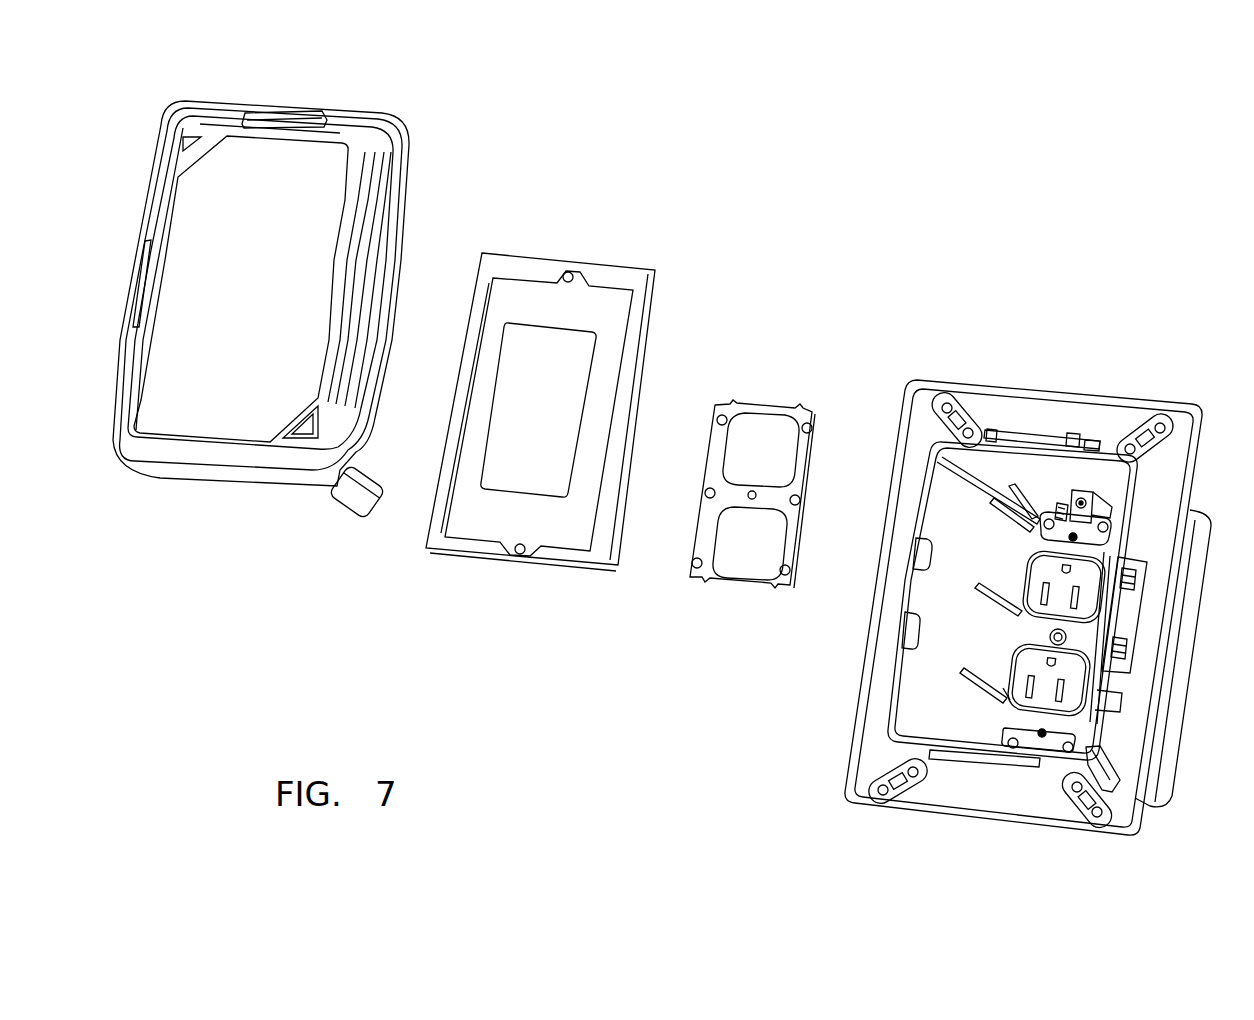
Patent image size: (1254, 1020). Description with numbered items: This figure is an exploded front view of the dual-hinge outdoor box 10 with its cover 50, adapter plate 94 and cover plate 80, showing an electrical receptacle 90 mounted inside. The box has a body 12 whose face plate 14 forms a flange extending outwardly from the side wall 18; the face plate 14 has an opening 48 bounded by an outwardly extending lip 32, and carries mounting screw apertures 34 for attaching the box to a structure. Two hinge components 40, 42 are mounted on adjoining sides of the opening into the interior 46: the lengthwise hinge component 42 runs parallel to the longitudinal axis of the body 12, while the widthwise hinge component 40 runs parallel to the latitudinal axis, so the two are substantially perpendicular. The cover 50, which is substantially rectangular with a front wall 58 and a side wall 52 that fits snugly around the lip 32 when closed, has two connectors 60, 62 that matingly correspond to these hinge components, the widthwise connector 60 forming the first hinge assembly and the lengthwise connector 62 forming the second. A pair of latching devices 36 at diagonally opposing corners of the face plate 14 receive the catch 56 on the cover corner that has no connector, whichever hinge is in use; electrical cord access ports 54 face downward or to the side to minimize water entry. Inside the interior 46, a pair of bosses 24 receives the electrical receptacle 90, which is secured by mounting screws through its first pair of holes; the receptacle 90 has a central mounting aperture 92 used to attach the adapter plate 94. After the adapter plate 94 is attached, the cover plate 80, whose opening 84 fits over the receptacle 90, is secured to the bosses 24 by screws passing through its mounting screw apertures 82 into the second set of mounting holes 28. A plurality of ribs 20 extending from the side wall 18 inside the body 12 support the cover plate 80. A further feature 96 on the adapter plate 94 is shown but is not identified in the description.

The dual-hinge outdoor box 10 is at (700, 652).
The body 12 is at (858, 829).
The face plate 14 is at (953, 793).
The side wall 18 is at (1158, 745).
The ribs 20 is at (990, 502).
The bosses 24 is at (1123, 520).
The second set of mounting holes 28 is at (1083, 498).
The lip 32 is at (1100, 508).
The mounting screw apertures 34 is at (1093, 815).
The latching devices 36 is at (1135, 787).
The hinge component 40 is at (1048, 500).
The hinge component 42 is at (1130, 633).
The interior 46 is at (1048, 496).
The opening 48 is at (905, 703).
The cover 50 is at (176, 90).
The side wall 52 is at (387, 215).
The electrical cord access ports 54 is at (1022, 765).
The catch 56 is at (352, 517).
The front wall 58 is at (261, 289).
The connector 60 is at (262, 110).
The connector 62 is at (138, 268).
The cover plate 80 is at (617, 265).
The mounting screw apertures 82 is at (572, 265).
The opening 84 is at (538, 410).
The electrical receptacle 90 is at (1005, 692).
The mounting aperture 92 is at (1122, 693).
The adapter plate 94 is at (775, 405).
The gasket center hole 96 is at (752, 500).